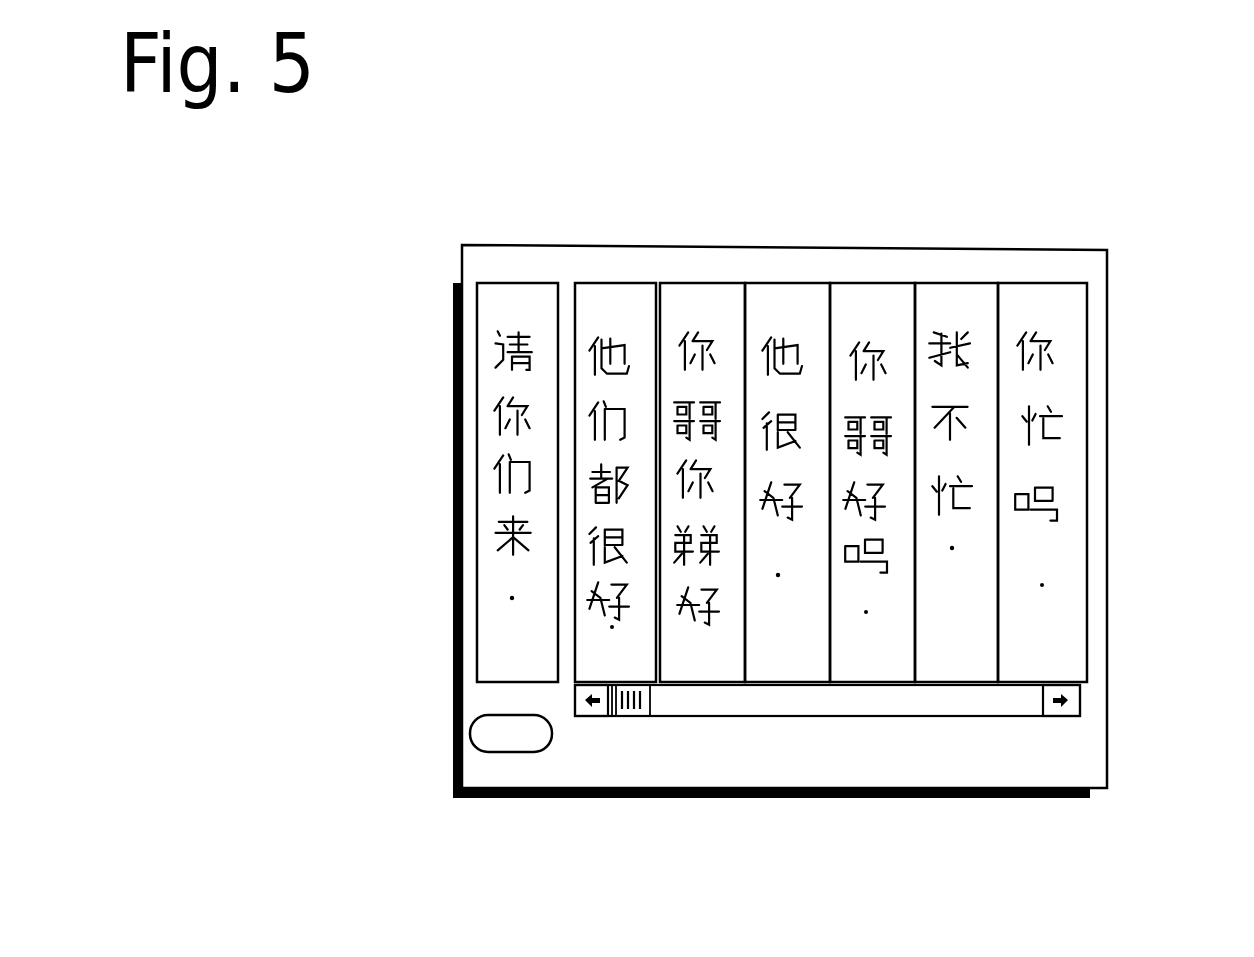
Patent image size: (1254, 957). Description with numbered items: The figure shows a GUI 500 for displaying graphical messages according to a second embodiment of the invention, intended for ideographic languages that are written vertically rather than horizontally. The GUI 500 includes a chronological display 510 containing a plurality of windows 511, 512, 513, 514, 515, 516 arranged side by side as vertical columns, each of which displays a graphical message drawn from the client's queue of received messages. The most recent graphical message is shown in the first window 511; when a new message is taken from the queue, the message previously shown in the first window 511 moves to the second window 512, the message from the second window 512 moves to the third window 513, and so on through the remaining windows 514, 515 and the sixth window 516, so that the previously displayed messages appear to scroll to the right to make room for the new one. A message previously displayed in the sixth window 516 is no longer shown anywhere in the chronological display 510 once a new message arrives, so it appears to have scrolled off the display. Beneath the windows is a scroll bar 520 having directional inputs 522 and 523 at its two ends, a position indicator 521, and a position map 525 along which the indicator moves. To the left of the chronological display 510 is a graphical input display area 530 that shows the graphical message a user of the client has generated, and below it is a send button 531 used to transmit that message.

The GUI 500 is at (1150, 113).
The chronological display 510 is at (742, 265).
The first window 511 is at (636, 676).
The second window 512 is at (718, 676).
The third window 513 is at (799, 676).
The window 514 is at (881, 676).
The window 515 is at (964, 676).
The sixth window 516 is at (1054, 676).
The scroll bar 520 is at (887, 750).
The position indicator 521 is at (650, 716).
The directional input 522 is at (1074, 707).
The directional input 523 is at (600, 714).
The position map 525 is at (823, 705).
The graphical input display area 530 is at (550, 676).
The send button 531 is at (518, 752).